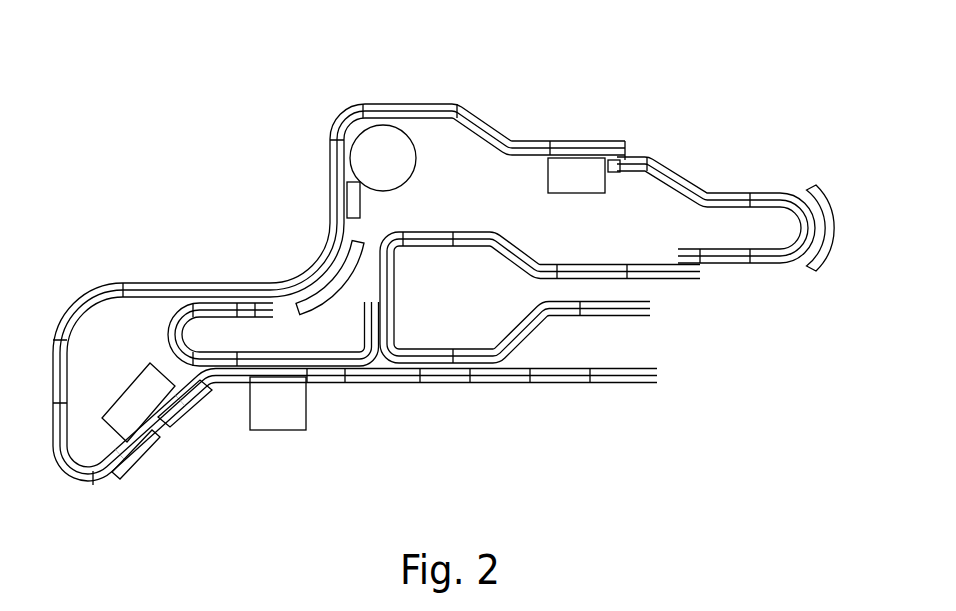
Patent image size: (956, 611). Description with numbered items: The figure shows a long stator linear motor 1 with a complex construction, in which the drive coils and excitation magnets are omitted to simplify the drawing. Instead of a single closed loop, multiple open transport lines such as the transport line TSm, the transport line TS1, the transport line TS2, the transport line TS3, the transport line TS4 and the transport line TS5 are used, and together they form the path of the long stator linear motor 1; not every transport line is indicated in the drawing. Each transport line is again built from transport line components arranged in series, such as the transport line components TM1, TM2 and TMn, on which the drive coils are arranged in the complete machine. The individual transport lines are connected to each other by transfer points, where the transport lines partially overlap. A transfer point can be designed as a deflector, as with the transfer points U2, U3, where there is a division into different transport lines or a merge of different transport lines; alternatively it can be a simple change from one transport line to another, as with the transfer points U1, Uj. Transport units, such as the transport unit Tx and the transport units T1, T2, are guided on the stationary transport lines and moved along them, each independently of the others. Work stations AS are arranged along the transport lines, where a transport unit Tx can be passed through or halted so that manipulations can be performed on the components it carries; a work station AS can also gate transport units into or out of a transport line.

The long stator linear motor 1 is at (443, 269).
The transport line component TM2 is at (365, 100).
The transport line component TM1 is at (425, 102).
The transport line TS1 is at (465, 106).
The transfer point U1 is at (598, 140).
The transport line component TMn is at (652, 158).
The transport line TSm is at (705, 192).
The transfer point Uj is at (697, 284).
The work station AS is at (398, 160).
The transport unit T1 is at (347, 200).
The transport unit Tx is at (615, 172).
The transport line TS2 is at (190, 286).
The transfer point U2 is at (229, 283).
The transport unit T2 is at (252, 304).
The transfer point U3 is at (405, 304).
The transport line TS3 is at (157, 428).
The transport line TS4 is at (212, 388).
The transport line TS5 is at (318, 385).